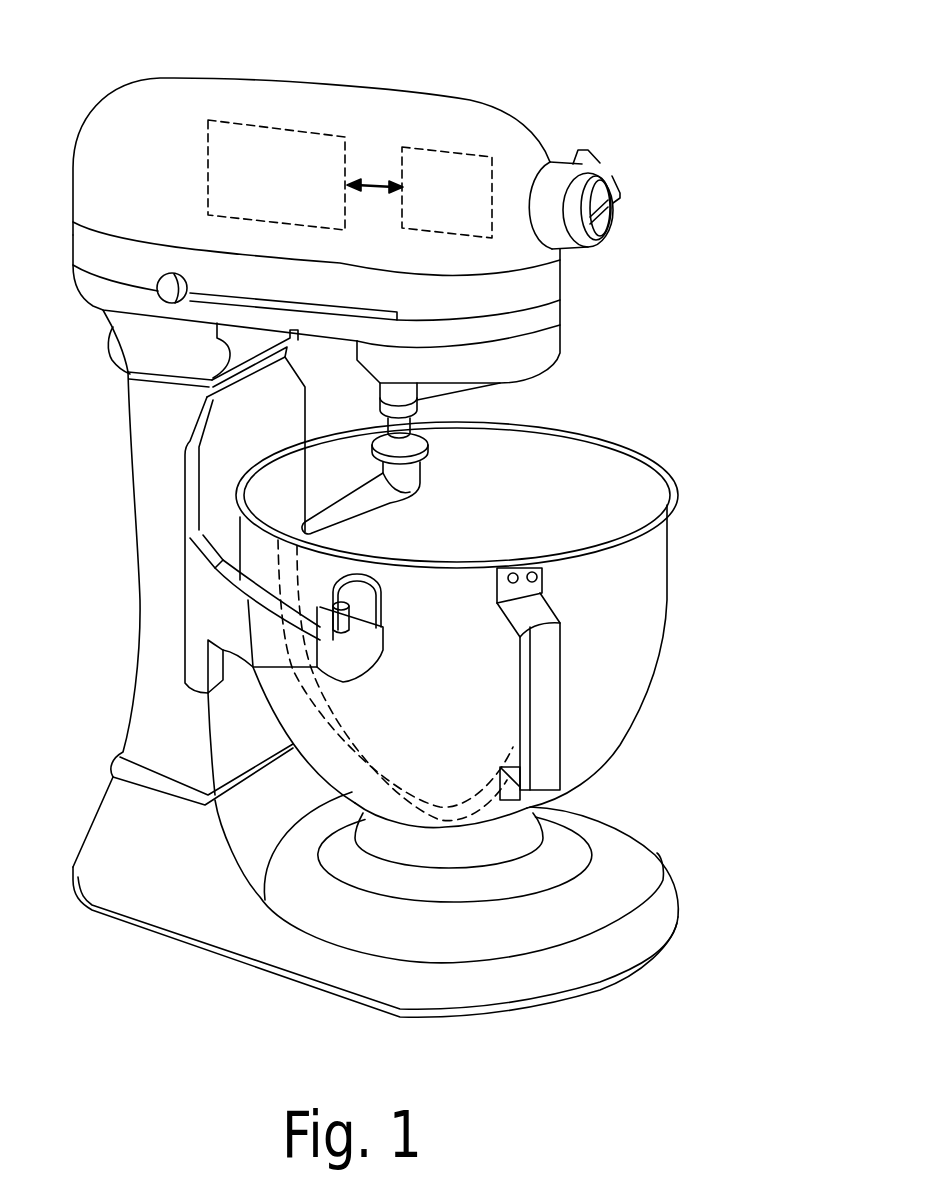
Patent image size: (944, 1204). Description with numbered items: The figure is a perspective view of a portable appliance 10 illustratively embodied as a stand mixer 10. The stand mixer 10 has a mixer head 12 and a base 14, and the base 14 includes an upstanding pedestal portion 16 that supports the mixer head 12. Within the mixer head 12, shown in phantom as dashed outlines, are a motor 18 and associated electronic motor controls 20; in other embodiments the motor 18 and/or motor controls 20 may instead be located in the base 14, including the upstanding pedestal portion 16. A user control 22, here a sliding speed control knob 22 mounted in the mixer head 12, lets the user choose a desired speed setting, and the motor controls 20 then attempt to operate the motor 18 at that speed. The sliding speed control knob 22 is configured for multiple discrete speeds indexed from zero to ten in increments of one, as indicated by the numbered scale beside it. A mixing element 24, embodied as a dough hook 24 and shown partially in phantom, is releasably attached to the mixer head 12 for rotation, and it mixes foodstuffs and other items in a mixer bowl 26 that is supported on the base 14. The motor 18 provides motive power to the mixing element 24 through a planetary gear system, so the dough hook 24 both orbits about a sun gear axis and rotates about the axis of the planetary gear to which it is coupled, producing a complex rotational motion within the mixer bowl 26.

The portable appliance 10 is at (423, 527).
The mixer head 12 is at (125, 108).
The base 14 is at (238, 943).
The upstanding pedestal portion 16 is at (155, 616).
The motor 18 is at (445, 165).
The motor controls 20 is at (300, 148).
The user control 22 is at (170, 280).
The mixing element 24 is at (355, 510).
The mixer bowl 26 is at (625, 700).